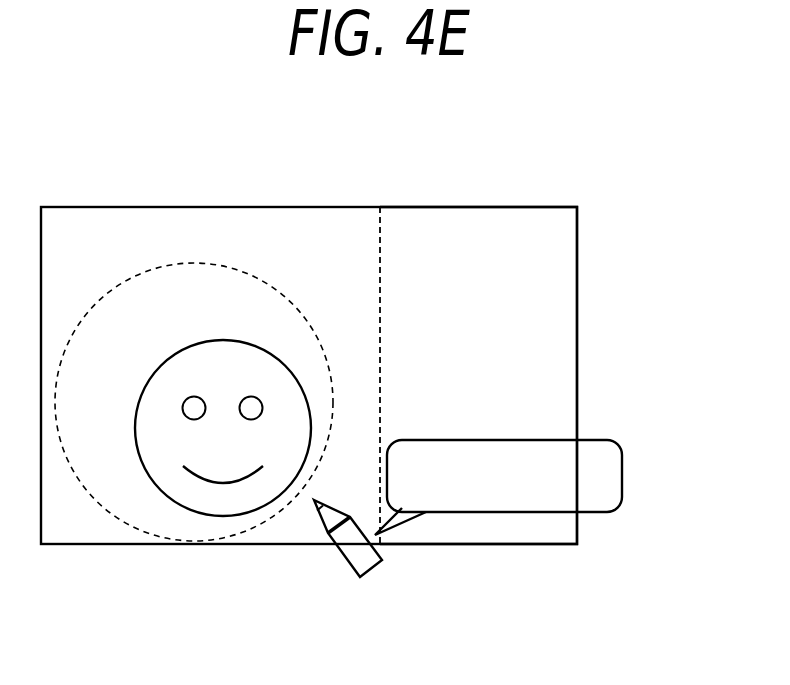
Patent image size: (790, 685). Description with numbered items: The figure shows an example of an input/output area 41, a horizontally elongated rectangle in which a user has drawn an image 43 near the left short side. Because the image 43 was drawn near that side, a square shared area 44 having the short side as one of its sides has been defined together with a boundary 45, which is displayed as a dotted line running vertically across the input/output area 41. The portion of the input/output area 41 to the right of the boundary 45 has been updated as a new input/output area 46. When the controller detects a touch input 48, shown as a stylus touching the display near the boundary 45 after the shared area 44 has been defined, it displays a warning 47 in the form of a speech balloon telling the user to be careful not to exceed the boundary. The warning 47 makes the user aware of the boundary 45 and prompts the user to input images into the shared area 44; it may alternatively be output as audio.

The input/output area 41 is at (122, 207).
The image 43 is at (227, 527).
The shared area 44 is at (275, 220).
The boundary 45 is at (382, 382).
The new input/output area 46 is at (562, 317).
The warning 47 is at (618, 480).
The touch input 48 is at (371, 570).